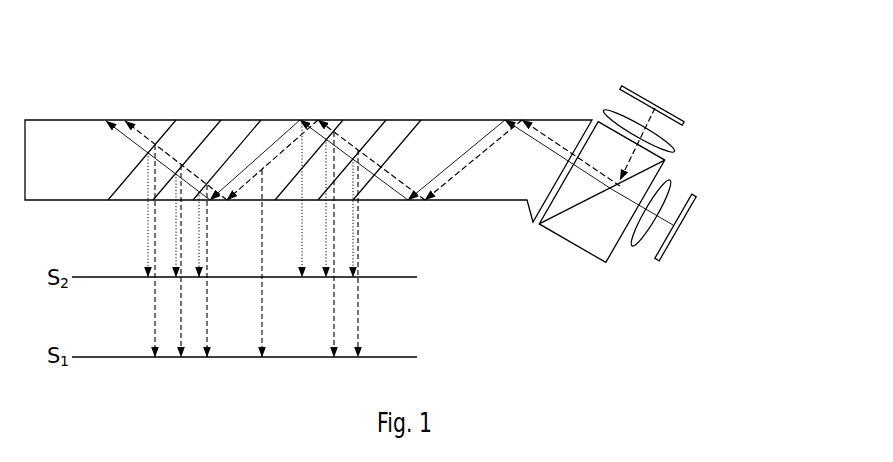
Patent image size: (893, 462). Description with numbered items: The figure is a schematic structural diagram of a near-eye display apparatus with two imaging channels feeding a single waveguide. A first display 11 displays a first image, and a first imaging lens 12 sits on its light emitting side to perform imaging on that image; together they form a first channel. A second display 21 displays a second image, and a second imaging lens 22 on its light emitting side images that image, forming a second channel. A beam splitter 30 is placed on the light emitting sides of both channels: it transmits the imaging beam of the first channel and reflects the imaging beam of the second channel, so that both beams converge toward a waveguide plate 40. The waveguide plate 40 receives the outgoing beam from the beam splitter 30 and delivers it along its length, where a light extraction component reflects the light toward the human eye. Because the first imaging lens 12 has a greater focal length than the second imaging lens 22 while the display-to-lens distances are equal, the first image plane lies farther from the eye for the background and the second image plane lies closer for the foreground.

The waveguide plate 40 is at (308, 148).
The beam splitter 30 is at (581, 208).
The second display 21 is at (695, 94).
The second imaging lens 22 is at (685, 130).
The first imaging lens 12 is at (698, 210).
The first display 11 is at (713, 235).